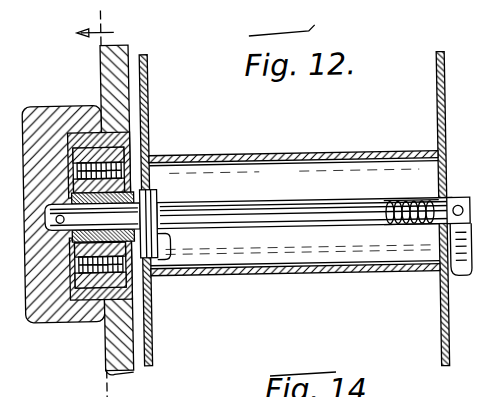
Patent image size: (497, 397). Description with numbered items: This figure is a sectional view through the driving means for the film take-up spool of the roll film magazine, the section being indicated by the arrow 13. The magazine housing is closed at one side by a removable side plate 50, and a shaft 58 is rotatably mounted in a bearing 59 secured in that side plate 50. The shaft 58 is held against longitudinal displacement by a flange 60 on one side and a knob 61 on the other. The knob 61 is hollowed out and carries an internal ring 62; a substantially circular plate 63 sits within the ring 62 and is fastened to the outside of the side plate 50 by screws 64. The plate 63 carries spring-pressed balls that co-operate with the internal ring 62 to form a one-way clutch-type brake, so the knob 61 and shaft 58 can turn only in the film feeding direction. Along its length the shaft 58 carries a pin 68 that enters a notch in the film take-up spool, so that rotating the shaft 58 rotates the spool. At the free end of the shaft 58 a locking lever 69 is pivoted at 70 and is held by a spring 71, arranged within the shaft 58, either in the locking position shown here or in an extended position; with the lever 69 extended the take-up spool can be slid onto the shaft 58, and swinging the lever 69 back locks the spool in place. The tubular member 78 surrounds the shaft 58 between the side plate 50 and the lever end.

The section line arrow 13 is at (119, 30).
The side plate 50 is at (108, 356).
The shaft 58 is at (292, 203).
The bearing 59 is at (160, 178).
The flange 60 is at (158, 201).
The knob 61 is at (44, 304).
The internal ring 62 is at (88, 115).
The circular plate 63 is at (134, 148).
The screws 64 is at (129, 166).
The pin 68 is at (185, 257).
The locking lever 69 is at (457, 266).
The pivot 70 is at (458, 206).
The spring 71 is at (416, 207).
The outer tube 78 is at (346, 159).